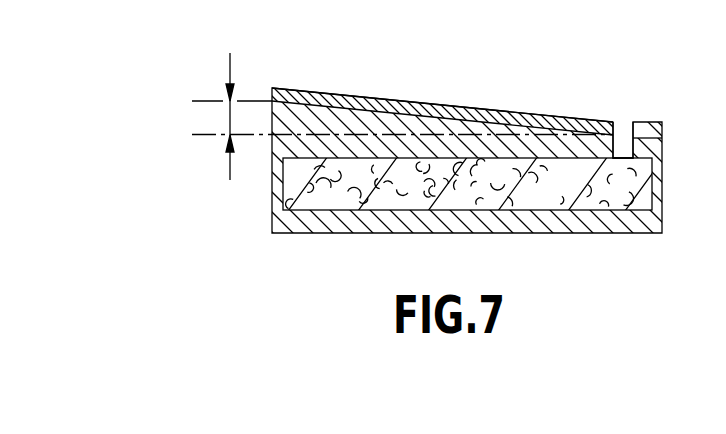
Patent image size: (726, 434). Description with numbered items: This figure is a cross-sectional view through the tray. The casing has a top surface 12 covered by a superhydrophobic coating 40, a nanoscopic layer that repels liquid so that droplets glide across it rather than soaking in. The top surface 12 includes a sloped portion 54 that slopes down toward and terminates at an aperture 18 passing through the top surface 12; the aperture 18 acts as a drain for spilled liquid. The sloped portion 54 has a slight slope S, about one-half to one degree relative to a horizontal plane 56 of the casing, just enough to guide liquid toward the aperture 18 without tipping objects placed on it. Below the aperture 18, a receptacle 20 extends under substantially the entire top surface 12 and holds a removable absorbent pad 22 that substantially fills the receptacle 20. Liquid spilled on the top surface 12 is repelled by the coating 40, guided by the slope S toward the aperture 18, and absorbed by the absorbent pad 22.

The top surface 12 is at (468, 104).
The superhydrophobic coating 40 is at (306, 96).
The sloped portion 54 is at (275, 90).
The aperture 18 is at (625, 125).
The receptacle 20 is at (282, 199).
The absorbent pad 22 is at (648, 174).
The horizontal plane 56 is at (208, 135).
The slope S is at (228, 120).